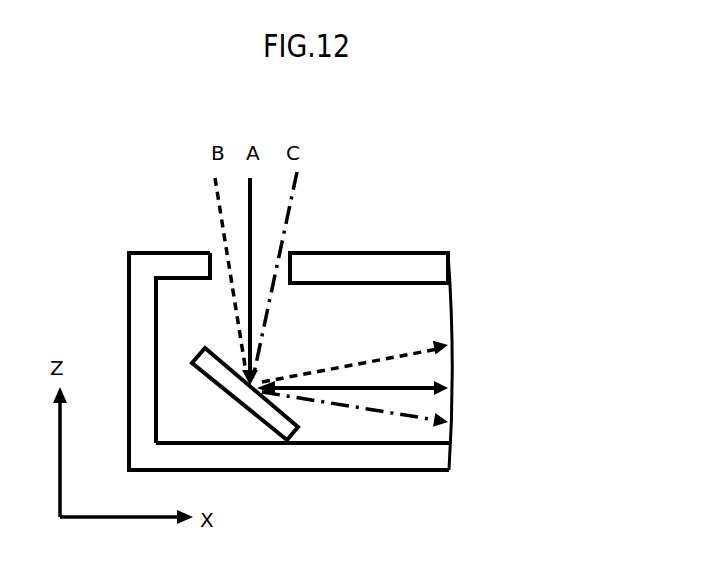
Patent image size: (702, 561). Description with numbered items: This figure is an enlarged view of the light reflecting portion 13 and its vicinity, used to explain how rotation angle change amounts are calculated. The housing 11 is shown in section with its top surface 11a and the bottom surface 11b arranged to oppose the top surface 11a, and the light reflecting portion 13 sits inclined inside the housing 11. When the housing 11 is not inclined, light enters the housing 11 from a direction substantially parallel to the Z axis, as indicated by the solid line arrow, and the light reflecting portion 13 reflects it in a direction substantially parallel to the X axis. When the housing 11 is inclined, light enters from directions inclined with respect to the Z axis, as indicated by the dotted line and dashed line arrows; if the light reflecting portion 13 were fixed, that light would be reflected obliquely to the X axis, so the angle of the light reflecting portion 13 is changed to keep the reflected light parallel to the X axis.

The housing 11 is at (367, 361).
The top surface 11a is at (427, 265).
The bottom surface 11b is at (334, 456).
The light reflecting portion 13 is at (270, 420).